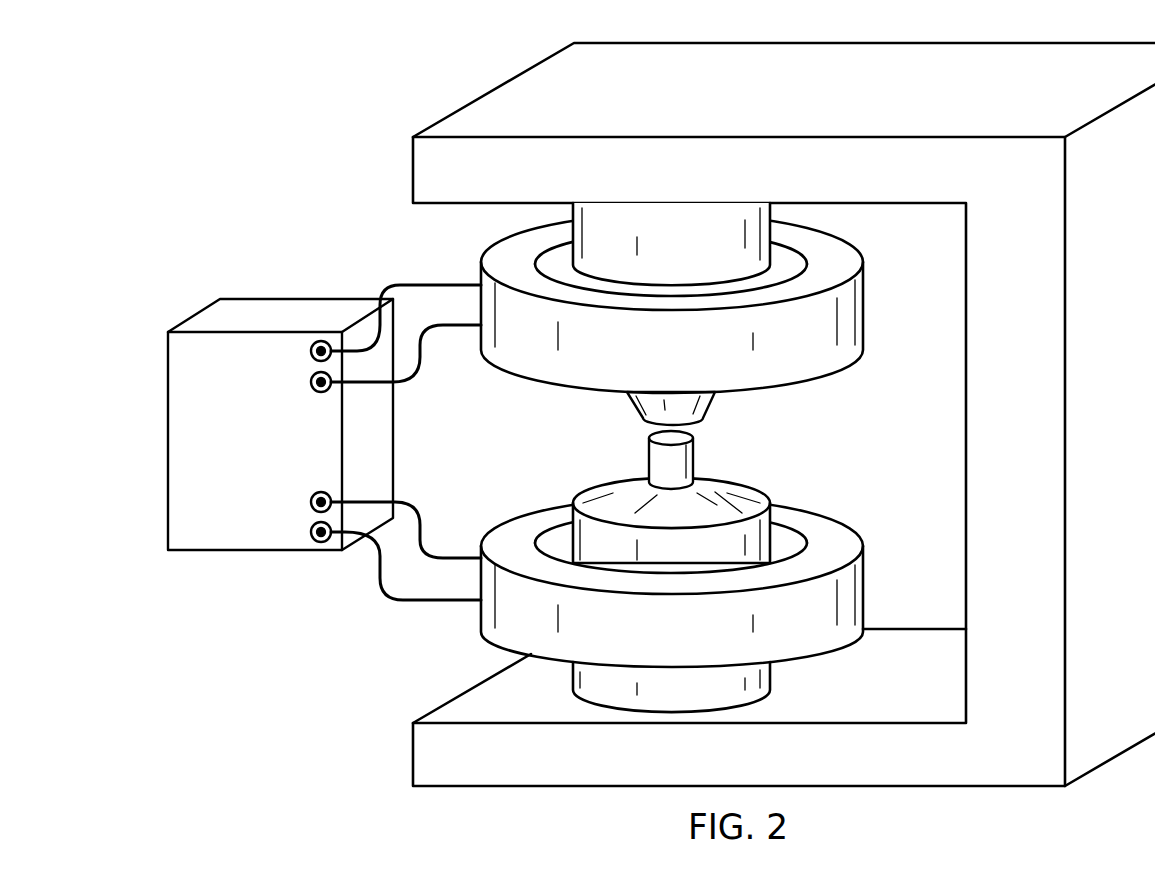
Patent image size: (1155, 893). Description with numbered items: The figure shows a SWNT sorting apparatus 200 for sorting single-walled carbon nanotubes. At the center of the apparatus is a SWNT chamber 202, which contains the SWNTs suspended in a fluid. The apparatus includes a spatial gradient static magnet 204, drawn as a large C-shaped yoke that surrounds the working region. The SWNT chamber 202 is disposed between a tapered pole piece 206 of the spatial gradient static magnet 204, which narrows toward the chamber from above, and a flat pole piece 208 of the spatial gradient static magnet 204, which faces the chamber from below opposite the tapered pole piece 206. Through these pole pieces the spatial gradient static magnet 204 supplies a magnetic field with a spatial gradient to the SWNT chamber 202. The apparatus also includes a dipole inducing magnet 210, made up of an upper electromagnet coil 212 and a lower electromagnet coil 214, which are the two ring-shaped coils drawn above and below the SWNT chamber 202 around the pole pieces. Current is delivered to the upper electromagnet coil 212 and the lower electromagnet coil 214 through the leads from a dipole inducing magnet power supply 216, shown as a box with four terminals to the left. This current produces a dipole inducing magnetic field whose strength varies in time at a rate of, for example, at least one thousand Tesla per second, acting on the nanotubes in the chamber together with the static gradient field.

The SWNT sorting apparatus 200 is at (628, 414).
The SWNT chamber 202 is at (648, 450).
The spatial gradient static magnet 204 is at (412, 170).
The tapered pole piece 206 is at (630, 411).
The flat pole piece 208 is at (733, 480).
The dipole inducing magnet 210 is at (370, 270).
The upper electromagnet coil 212 is at (863, 297).
The lower electromagnet coil 214 is at (863, 577).
The dipole inducing magnet power supply 216 is at (167, 440).